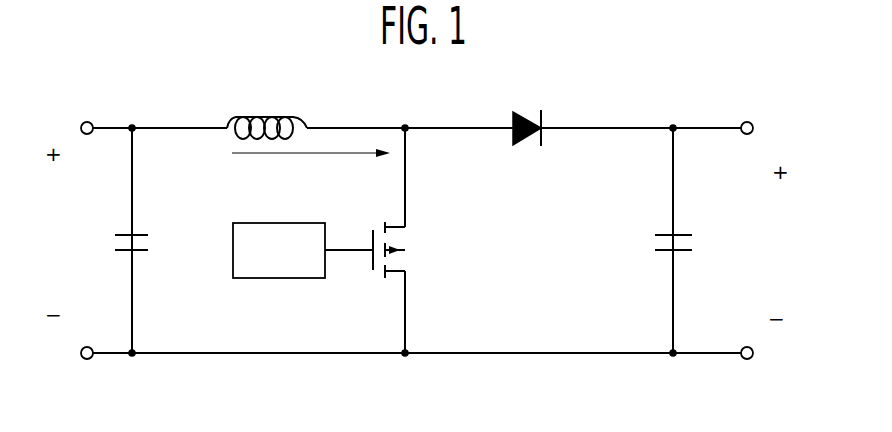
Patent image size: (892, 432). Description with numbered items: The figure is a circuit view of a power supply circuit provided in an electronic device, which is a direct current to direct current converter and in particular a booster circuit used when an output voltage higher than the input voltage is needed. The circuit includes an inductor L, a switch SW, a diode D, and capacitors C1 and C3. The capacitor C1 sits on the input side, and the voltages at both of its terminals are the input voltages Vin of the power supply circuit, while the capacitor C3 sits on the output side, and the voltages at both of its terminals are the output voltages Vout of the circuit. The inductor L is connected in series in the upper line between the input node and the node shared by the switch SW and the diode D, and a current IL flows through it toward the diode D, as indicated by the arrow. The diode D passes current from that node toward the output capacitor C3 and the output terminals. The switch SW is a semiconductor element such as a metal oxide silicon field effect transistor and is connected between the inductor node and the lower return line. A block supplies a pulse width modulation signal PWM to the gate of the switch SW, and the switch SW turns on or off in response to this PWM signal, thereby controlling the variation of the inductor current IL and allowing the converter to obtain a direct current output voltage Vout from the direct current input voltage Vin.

The inductor L is at (267, 112).
The inductor current IL is at (311, 166).
The diode D is at (527, 117).
The capacitor C1 is at (144, 246).
The capacitor C3 is at (686, 246).
The pulse width modulation signal PWM is at (303, 250).
The switch SW is at (374, 247).
The input voltage Vin is at (49, 243).
The output voltage Vout is at (780, 243).